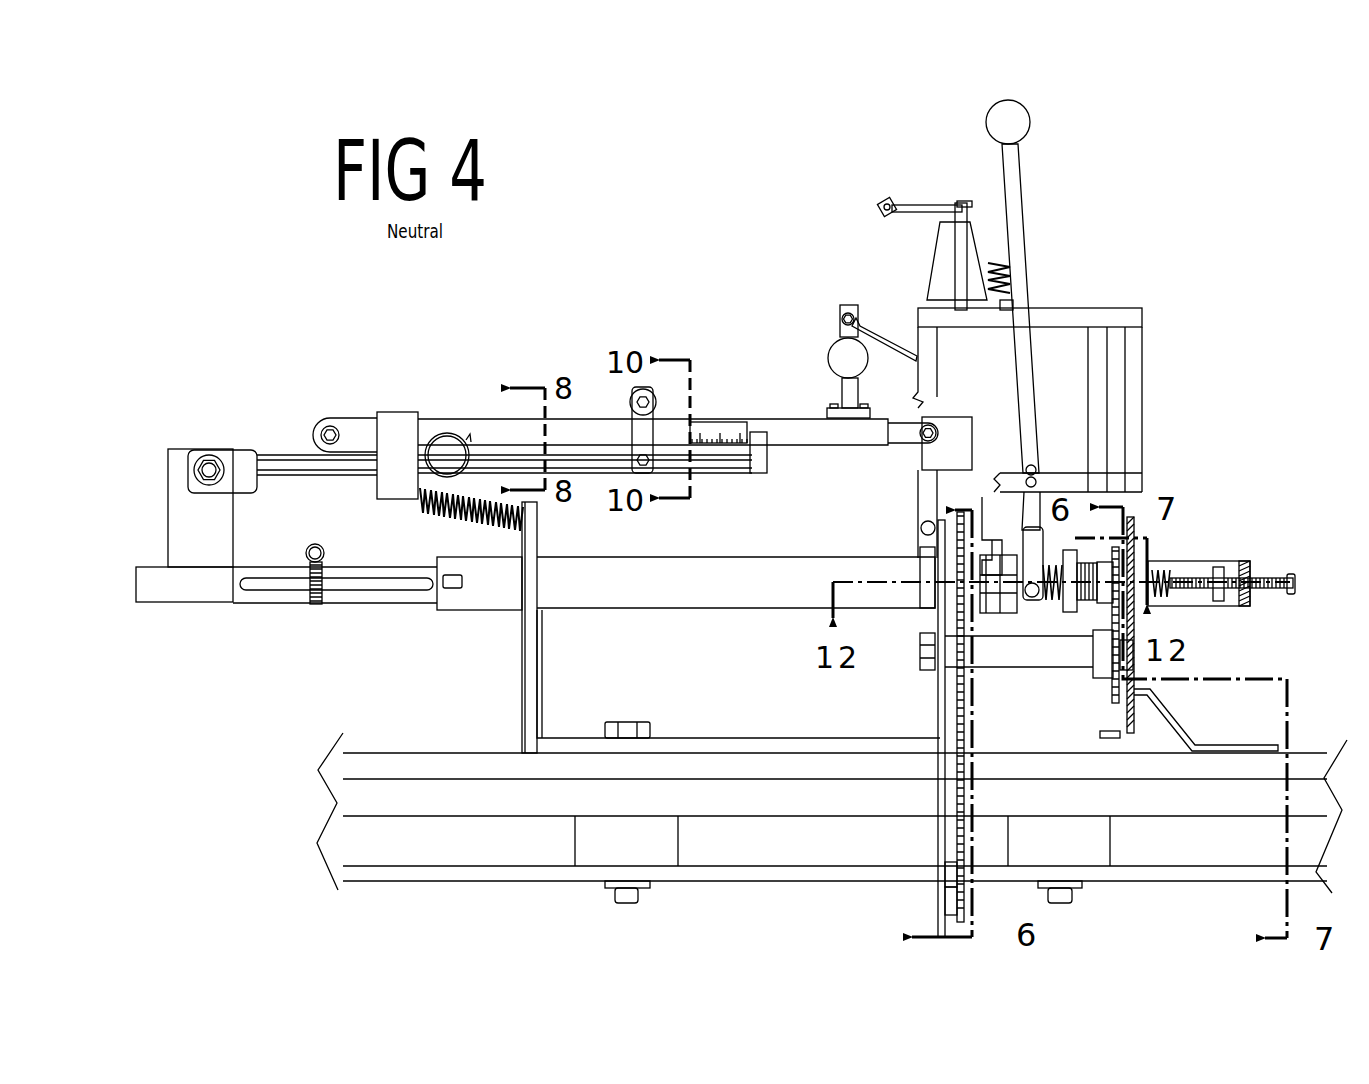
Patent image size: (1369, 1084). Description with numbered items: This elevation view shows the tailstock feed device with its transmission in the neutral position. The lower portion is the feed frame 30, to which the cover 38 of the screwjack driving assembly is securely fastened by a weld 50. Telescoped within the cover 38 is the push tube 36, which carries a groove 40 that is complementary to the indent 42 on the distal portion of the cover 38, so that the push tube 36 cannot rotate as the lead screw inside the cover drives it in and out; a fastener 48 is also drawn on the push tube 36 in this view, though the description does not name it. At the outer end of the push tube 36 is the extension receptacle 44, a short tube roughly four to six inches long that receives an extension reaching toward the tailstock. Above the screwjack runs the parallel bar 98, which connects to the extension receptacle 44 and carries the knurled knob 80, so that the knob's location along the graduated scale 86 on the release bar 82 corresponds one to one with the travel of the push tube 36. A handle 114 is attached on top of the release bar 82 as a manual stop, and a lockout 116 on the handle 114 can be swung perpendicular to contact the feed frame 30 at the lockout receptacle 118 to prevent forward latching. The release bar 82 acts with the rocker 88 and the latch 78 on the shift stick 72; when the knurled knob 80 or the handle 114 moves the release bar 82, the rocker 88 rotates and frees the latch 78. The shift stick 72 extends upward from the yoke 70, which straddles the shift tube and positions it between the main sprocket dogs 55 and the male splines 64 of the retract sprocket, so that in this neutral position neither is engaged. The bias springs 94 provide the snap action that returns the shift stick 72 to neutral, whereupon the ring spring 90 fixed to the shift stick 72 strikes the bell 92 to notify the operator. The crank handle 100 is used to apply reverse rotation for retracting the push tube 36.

The feed frame 30 is at (528, 700).
The push tube 36 is at (266, 594).
The cover 38 is at (668, 593).
The groove 40 is at (395, 586).
The indent 42 is at (455, 584).
The extension receptacle 44 is at (183, 583).
The bolt 48 is at (318, 606).
The weld 50 is at (935, 610).
The main sprocket dogs 55 is at (978, 600).
The male splines 64 is at (1090, 605).
The yoke 70 is at (1038, 548).
The shift stick 72 is at (1013, 188).
The latch 78 is at (1010, 533).
The knurled knob 80 is at (447, 445).
The release bar 82 is at (345, 428).
The graduated scale 86 is at (710, 432).
The rocker 88 is at (955, 432).
The ring spring 90 is at (996, 262).
The bell 92 is at (940, 262).
The bias springs 94 is at (1160, 565).
The parallel bar 98 is at (300, 462).
The crank handle 100 is at (1213, 742).
The handle 114 is at (836, 355).
The lockout 116 is at (888, 333).
The lockout receptacle 118 is at (395, 420).